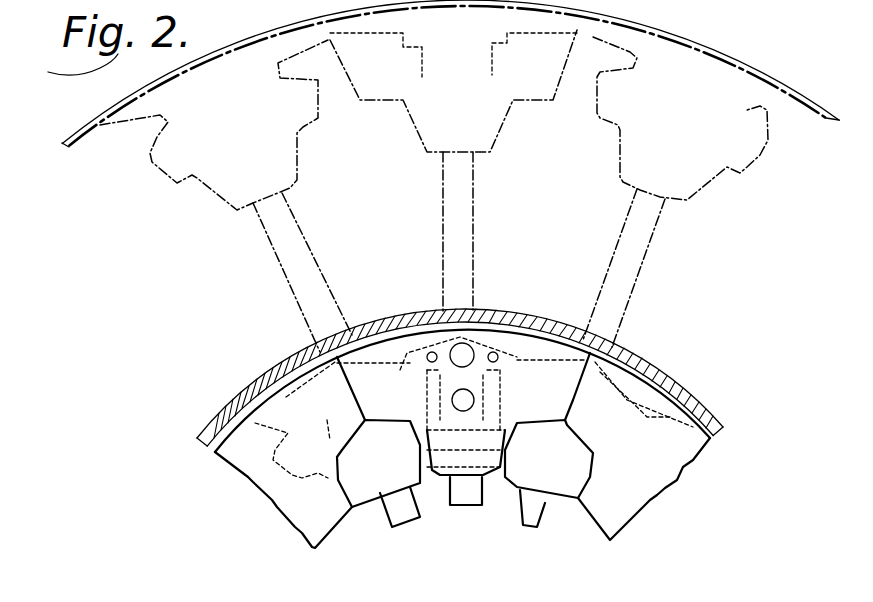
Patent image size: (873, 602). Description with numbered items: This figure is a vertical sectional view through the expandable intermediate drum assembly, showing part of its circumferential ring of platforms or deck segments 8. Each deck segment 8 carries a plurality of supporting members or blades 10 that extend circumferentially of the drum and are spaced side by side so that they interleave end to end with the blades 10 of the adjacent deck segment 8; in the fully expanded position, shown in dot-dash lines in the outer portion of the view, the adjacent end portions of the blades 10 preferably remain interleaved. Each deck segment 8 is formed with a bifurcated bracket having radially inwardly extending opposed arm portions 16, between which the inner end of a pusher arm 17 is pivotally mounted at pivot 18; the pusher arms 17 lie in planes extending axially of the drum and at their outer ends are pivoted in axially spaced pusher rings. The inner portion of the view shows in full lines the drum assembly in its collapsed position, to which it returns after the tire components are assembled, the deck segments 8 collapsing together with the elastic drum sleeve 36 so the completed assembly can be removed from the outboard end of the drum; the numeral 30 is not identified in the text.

The deck segment 8 is at (736, 187).
The supporting member 10 is at (222, 198).
The arm portion 16 is at (493, 460).
The pusher arm 17 is at (443, 260).
The pivot 18 is at (493, 430).
The outer housing ring 30 is at (638, 22).
The elastic drum sleeve 36 is at (515, 316).